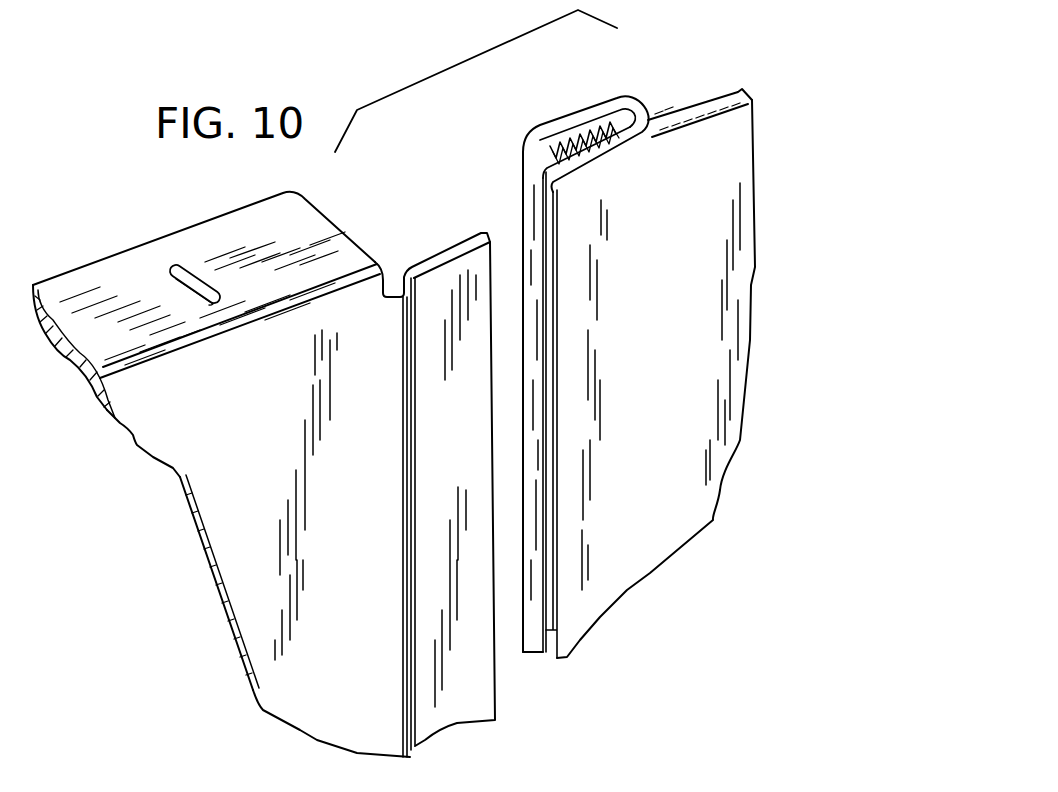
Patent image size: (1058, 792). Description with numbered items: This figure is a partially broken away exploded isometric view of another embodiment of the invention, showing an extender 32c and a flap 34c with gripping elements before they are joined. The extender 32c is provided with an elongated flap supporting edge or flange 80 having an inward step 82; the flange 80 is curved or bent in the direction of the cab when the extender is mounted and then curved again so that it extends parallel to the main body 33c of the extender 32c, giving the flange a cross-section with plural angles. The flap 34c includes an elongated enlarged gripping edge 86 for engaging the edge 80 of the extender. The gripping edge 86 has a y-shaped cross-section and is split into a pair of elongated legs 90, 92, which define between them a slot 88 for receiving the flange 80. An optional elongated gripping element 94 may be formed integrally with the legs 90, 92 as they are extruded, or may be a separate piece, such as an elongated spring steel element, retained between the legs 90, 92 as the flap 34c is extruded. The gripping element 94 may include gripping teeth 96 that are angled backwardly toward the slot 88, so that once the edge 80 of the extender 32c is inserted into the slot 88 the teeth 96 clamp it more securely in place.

The extender 32c is at (151, 427).
The main body of extender 33c is at (228, 572).
The flap supporting edge or flange 80 is at (437, 245).
The inward step 82 is at (408, 572).
The gripping edge 86 is at (527, 128).
The slot 88 is at (545, 323).
The leg 90 is at (566, 120).
The leg 92 is at (601, 163).
The gripping element 94 is at (633, 112).
The gripping teeth 96 is at (672, 132).
The flap 34c is at (782, 298).